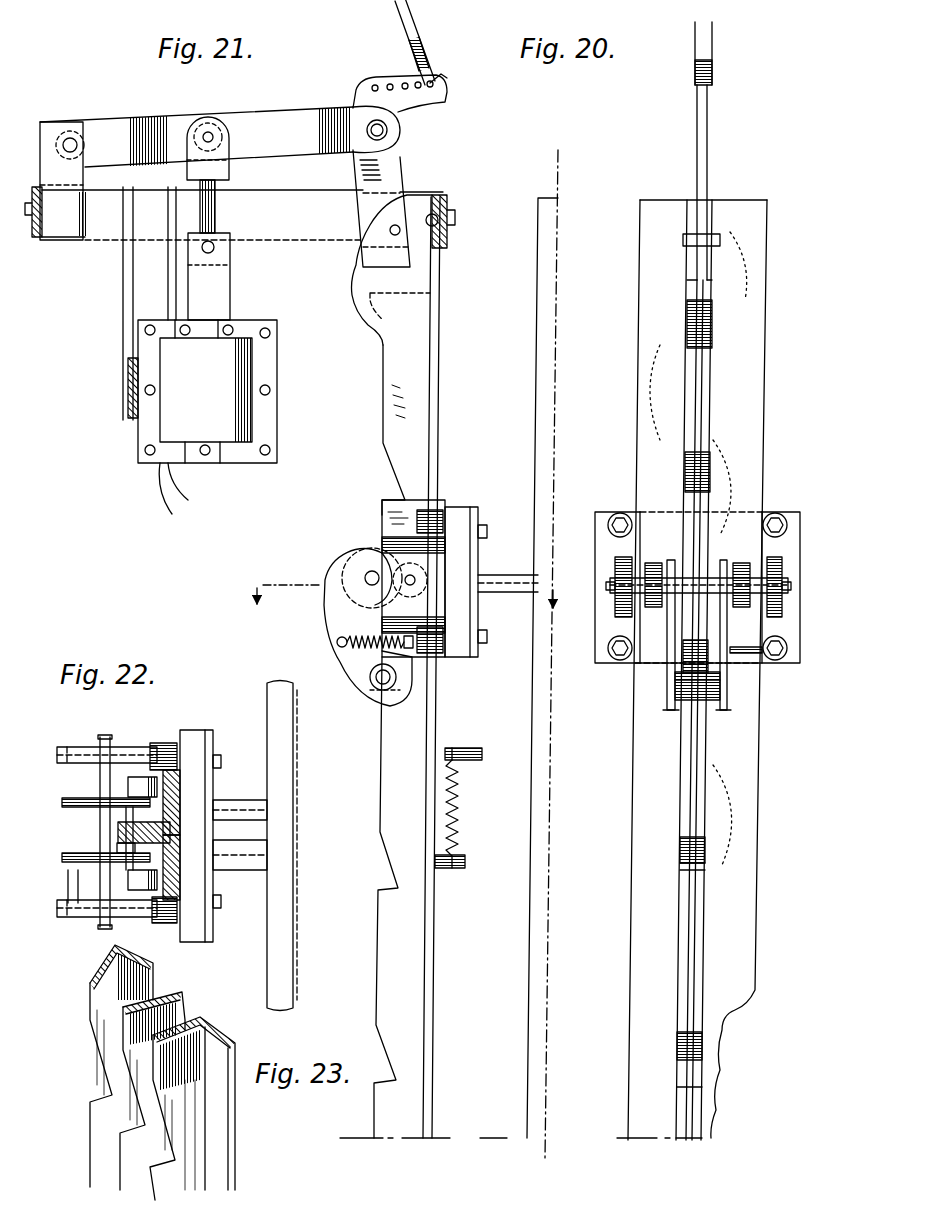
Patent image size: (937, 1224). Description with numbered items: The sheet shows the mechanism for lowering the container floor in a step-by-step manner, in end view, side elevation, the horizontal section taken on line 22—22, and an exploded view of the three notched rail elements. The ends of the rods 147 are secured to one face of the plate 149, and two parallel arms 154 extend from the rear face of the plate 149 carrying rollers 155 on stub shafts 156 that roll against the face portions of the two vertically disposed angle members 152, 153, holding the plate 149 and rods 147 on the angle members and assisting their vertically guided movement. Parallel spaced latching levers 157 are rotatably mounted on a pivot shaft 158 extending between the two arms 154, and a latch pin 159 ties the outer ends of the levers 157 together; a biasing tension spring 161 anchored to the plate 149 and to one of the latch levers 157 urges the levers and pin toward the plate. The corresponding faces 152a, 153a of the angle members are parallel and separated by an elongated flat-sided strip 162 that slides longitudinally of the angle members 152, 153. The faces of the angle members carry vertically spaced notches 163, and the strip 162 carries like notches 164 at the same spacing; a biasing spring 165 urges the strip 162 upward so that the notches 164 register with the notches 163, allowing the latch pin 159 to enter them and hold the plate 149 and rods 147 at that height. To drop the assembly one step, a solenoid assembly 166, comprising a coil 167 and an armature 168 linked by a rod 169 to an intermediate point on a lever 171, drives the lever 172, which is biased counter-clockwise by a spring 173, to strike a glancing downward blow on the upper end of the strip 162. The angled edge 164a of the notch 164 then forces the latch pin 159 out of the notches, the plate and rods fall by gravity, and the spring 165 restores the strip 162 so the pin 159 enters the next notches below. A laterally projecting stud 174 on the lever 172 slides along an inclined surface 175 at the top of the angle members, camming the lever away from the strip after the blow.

In FIG. 21, the section line 22— 22 is at (412, 585).
In FIG. 21, the rods 147 is at (507, 592).
In FIG. 22, the rods 147 is at (255, 810).
In FIG. 21, the plate 149 is at (477, 497).
In FIG. 20, the plate 149 is at (594, 516).
In FIG. 22, the plate 149 is at (210, 717).
In FIG. 20, the angle member 152 is at (638, 440).
In FIG. 23, the angle member 152 is at (113, 958).
In FIG. 20, the face of angle member 152a is at (686, 382).
In FIG. 22, the face of angle member 152a is at (160, 817).
In FIG. 23, the face of angle member 152a is at (110, 973).
In FIG. 21, the angle member 153 is at (433, 957).
In FIG. 20, the angle member 153 is at (747, 437).
In FIG. 23, the angle member 153 is at (213, 1137).
In FIG. 20, the face of angle member 153a is at (713, 373).
In FIG. 22, the face of angle member 153a is at (152, 847).
In FIG. 23, the face of angle member 153a is at (198, 1020).
In FIG. 21, the parallel arms 154 is at (380, 552).
In FIG. 20, the parallel arms 154 is at (612, 563).
In FIG. 22, the parallel arms 154 is at (72, 738).
In FIG. 20, the rollers 155 is at (660, 602).
In FIG. 22, the rollers 155 is at (133, 778).
In FIG. 22, the stub shafts 156 is at (143, 775).
In FIG. 21, the latching levers 157 is at (340, 655).
In FIG. 20, the latching levers 157 is at (774, 527).
In FIG. 22, the latching levers 157 is at (64, 803).
In FIG. 21, the pivot shaft 158 is at (366, 575).
In FIG. 20, the pivot shaft 158 is at (704, 582).
In FIG. 22, the pivot shaft 158 is at (100, 781).
In FIG. 21, the latch pin 159 is at (378, 688).
In FIG. 20, the latch pin 159 is at (688, 703).
In FIG. 22, the latch pin 159 is at (120, 850).
In FIG. 21, the biasing tension spring 161 is at (340, 628).
In FIG. 20, the biasing tension spring 161 is at (807, 650).
In FIG. 21, the slidable strip member 162 is at (393, 333).
In FIG. 20, the slidable strip member 162 is at (698, 402).
In FIG. 23, the slidable strip member 162 is at (203, 990).
In FIG. 21, the notches 163 is at (398, 888).
In FIG. 20, the notches 163 is at (688, 863).
In FIG. 23, the notches 163 is at (107, 1087).
In FIG. 20, the notches 164 is at (688, 887).
In FIG. 23, the notches 164 is at (110, 1125).
In FIG. 23, the angled edge of notch 164a is at (123, 1075).
In FIG. 21, the biasing spring 165 is at (456, 812).
In FIG. 21, the solenoid assembly 166 is at (170, 417).
In FIG. 21, the coil 167 is at (215, 394).
In FIG. 21, the armature 168 is at (215, 296).
In FIG. 22, the armature 168 is at (172, 833).
In FIG. 21, the rod 169 is at (216, 212).
In FIG. 21, the lever 171 is at (282, 102).
In FIG. 21, the lever 172 is at (402, 163).
In FIG. 20, the lever 172 is at (700, 151).
In FIG. 21, the spring 173 is at (438, 80).
In FIG. 21, the laterally projecting stud 174 is at (391, 232).
In FIG. 20, the laterally projecting stud 174 is at (683, 239).
In FIG. 21, the inclined surface 175 is at (368, 283).
In FIG. 20, the inclined surface 175 is at (688, 277).